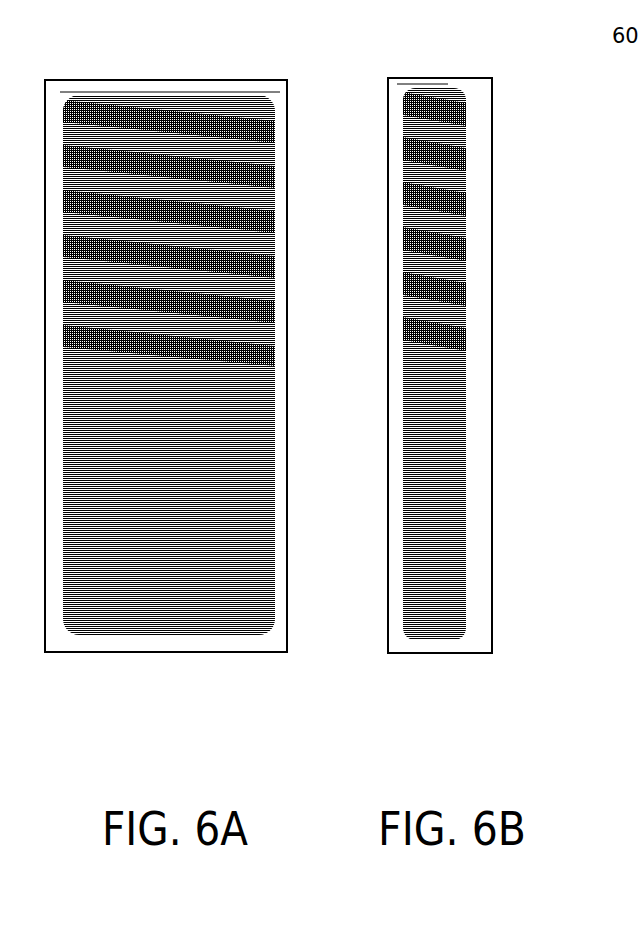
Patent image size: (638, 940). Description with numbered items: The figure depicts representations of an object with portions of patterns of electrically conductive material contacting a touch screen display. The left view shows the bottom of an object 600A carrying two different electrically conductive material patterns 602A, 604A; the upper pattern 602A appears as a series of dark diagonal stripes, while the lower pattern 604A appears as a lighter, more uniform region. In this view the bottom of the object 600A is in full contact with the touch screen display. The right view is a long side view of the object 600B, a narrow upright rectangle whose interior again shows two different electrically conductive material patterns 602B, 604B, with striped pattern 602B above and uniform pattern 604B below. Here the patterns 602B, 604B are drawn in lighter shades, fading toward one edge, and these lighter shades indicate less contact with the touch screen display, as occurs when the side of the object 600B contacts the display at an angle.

In FIG. 6A, the object 600A is at (146, 78).
In FIG. 6A, the electrically conductive material pattern 602A is at (250, 212).
In FIG. 6A, the electrically conductive material pattern 604A is at (250, 465).
In FIG. 6B, the object 600B is at (446, 78).
In FIG. 6B, the electrically conductive material pattern 602B is at (450, 200).
In FIG. 6B, the electrically conductive material pattern 604B is at (447, 465).